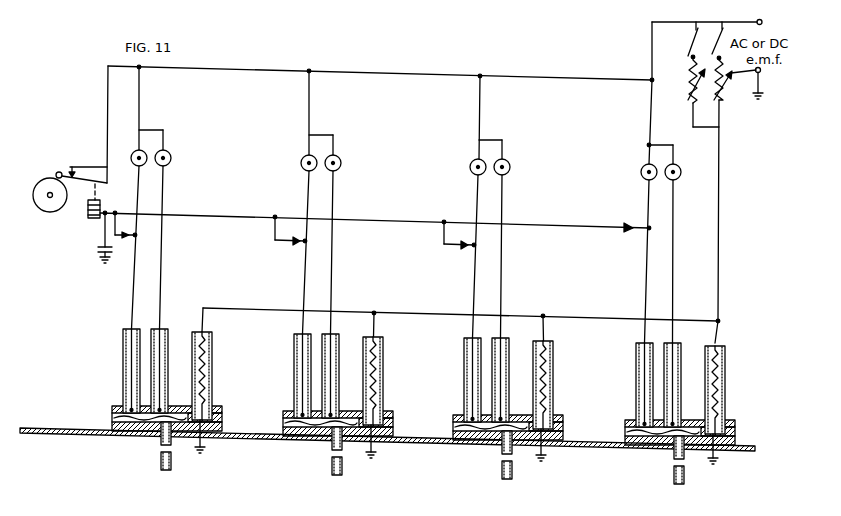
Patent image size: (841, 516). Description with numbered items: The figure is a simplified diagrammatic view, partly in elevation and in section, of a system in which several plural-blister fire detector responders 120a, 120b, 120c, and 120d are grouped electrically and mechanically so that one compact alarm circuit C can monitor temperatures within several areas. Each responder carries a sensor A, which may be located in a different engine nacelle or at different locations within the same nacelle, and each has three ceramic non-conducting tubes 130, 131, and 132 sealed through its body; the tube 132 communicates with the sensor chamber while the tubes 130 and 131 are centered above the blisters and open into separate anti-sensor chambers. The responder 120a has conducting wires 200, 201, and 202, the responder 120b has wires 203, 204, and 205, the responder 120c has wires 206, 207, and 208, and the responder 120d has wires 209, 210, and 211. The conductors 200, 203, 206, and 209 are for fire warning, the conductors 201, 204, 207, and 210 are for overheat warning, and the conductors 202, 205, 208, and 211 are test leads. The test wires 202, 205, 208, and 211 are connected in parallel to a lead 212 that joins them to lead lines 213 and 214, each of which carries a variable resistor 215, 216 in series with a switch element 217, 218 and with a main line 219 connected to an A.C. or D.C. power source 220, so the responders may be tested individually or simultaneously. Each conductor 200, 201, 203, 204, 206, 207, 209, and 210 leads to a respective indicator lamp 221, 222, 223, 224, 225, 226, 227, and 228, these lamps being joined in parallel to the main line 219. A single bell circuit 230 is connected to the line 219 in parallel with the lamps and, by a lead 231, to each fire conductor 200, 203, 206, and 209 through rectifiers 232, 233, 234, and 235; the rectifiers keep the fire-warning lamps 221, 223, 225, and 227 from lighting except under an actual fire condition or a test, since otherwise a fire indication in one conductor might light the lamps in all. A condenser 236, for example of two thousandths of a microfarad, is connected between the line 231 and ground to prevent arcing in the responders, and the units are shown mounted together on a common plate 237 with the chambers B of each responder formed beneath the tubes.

The responder 120a is at (111, 405).
The responder 120b is at (283, 410).
The responder 120c is at (452, 412).
The responder 120d is at (748, 402).
The tube 130 is at (123, 345).
The tube 131 is at (167, 355).
The tube 132 is at (212, 347).
The conducting wire 200 is at (132, 305).
The conducting wire 201 is at (161, 273).
The conducting wire 202 is at (274, 309).
The wire 203 is at (307, 275).
The wire 204 is at (331, 275).
The wire 205 is at (377, 326).
The wire 206 is at (473, 283).
The wire 207 is at (501, 285).
The wire 208 is at (544, 325).
The wire 209 is at (647, 289).
The wire 210 is at (672, 284).
The wire 211 is at (719, 326).
The lead 212 is at (719, 228).
The lead line 213 is at (719, 128).
The lead line 214 is at (693, 127).
The variable resistor 215 is at (721, 104).
The variable resistor 216 is at (689, 89).
The switch element 217 is at (718, 42).
The switch element 218 is at (691, 45).
The main line 219 is at (384, 72).
The power source 220 is at (729, 79).
The indicator lamp 221 is at (133, 154).
The indicator lamp 222 is at (172, 156).
The indicator lamp 223 is at (301, 165).
The indicator lamp 224 is at (342, 164).
The indicator lamp 225 is at (470, 174).
The indicator lamp 226 is at (511, 172).
The indicator lamp 227 is at (643, 176).
The indicator lamp 228 is at (681, 176).
The bell circuit 230 is at (101, 207).
The lead 231 is at (258, 217).
The rectifier 232 is at (124, 240).
The rectifier 233 is at (294, 244).
The rectifier 234 is at (467, 248).
The rectifier 235 is at (625, 232).
The condenser 236 is at (98, 250).
The mounting plate 237 is at (578, 452).
The sensor A is at (158, 467).
The chamber B is at (105, 419).
The alarm circuit C is at (104, 98).